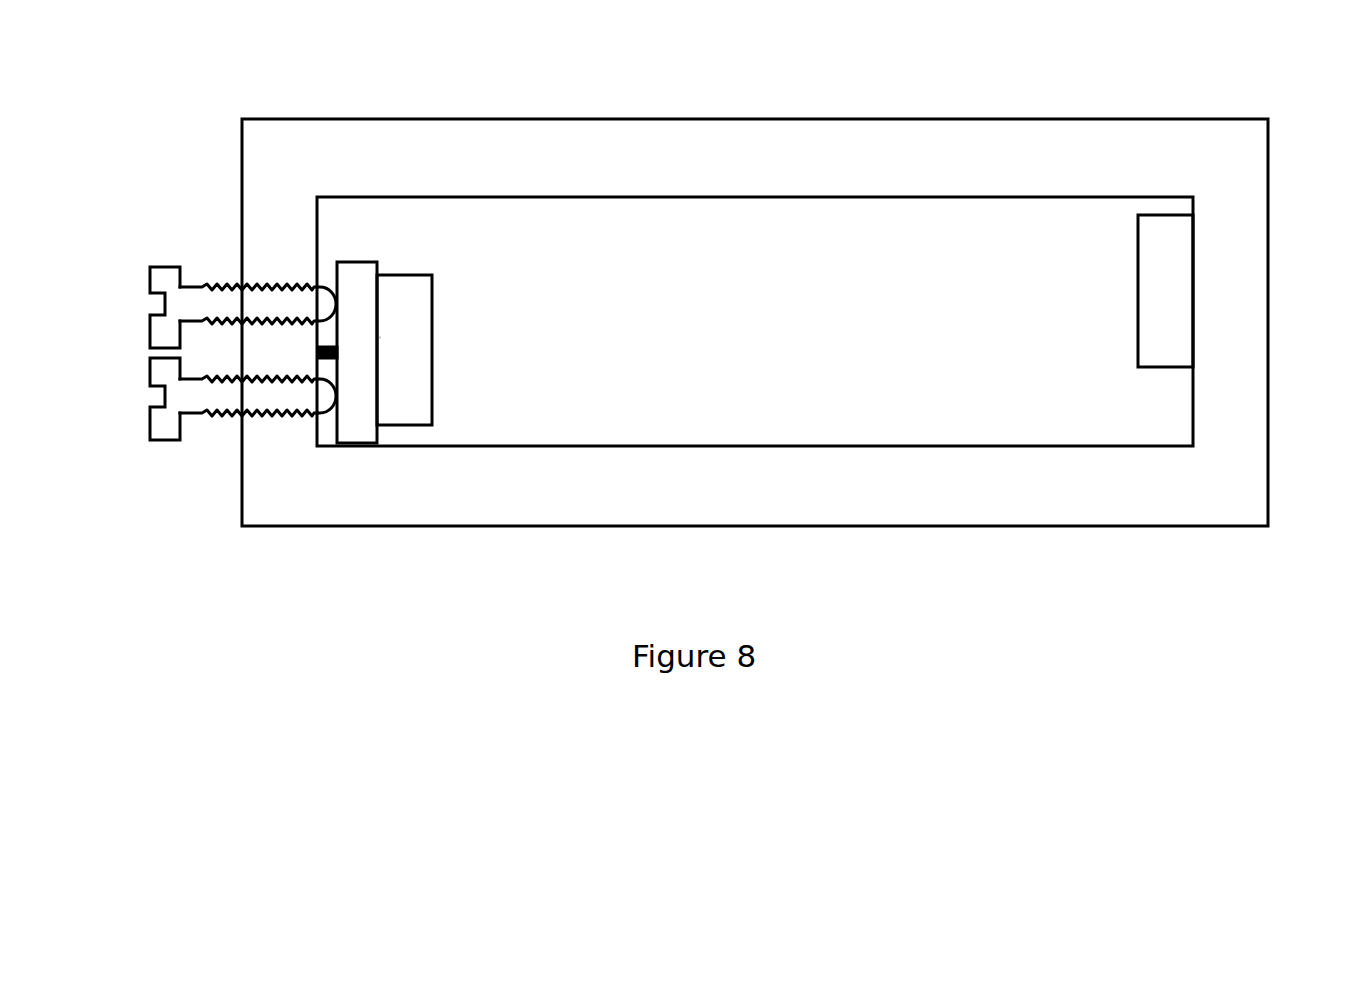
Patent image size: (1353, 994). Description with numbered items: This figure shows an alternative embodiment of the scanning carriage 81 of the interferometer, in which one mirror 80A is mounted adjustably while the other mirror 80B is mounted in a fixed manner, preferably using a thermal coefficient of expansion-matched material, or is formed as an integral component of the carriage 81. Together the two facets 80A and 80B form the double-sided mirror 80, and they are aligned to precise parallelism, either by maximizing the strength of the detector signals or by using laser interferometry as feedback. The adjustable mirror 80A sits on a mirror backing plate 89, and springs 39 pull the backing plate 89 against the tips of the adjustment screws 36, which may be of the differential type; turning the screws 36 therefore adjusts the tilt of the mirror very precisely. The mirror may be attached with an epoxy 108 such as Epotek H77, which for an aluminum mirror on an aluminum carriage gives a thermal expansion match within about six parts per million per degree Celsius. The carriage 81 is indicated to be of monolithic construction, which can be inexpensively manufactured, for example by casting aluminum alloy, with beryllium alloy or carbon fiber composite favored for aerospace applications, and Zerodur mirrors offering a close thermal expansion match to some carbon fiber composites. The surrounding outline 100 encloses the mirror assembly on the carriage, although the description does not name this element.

The adjustment screws 36 is at (147, 312).
The springs 39 is at (322, 346).
The double-sided mirror 80 is at (785, 233).
The mirror 80A is at (432, 395).
The mirror 80B is at (1138, 317).
The scanning carriage 81 is at (655, 146).
The mirror backing plate 89 is at (358, 450).
The inner housing 100 is at (1193, 312).
The epoxy 108 is at (380, 337).